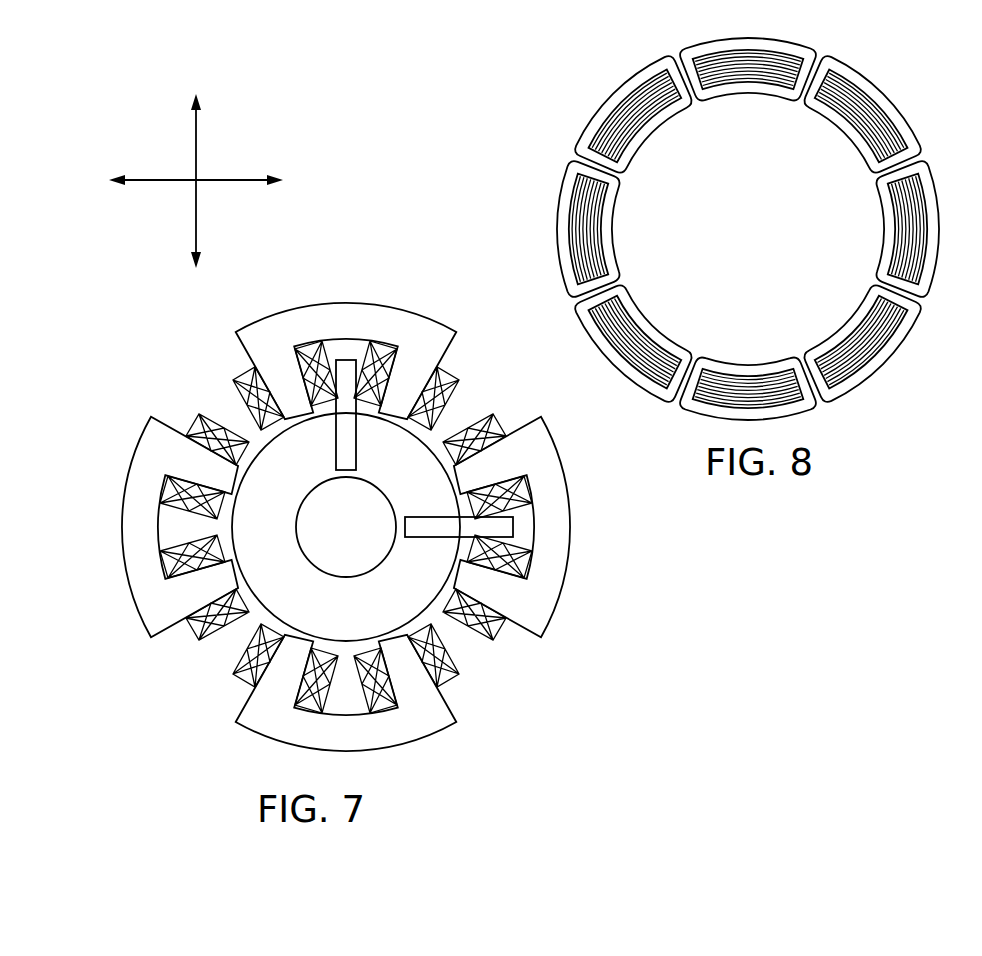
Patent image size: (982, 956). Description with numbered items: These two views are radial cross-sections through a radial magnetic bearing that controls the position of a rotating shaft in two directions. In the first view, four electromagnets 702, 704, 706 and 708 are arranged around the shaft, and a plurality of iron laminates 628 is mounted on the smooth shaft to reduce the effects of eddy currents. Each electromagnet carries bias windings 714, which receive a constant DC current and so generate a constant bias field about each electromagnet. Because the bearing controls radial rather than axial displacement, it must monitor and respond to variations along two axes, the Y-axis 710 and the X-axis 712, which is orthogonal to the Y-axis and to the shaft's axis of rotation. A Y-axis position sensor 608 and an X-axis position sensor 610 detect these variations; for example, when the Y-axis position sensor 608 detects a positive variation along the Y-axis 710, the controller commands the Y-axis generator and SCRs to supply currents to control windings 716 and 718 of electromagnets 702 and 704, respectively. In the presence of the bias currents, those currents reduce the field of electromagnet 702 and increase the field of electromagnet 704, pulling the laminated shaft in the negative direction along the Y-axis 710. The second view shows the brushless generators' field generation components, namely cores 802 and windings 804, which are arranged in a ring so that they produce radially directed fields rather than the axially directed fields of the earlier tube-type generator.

In FIG. 7, the Y-axis position sensor 608 is at (357, 448).
In FIG. 7, the X-axis position sensor 610 is at (435, 537).
In FIG. 7, the iron laminates 628 is at (275, 517).
In FIG. 7, the electromagnet 702 is at (351, 305).
In FIG. 7, the electromagnet 704 is at (350, 752).
In FIG. 7, the electromagnet 706 is at (122, 542).
In FIG. 7, the electromagnet 708 is at (561, 590).
In FIG. 7, the Y-axis 710 is at (196, 137).
In FIG. 7, the X-axis 712 is at (252, 178).
In FIG. 7, the bias windings 714 is at (443, 424).
In FIG. 7, the control winding 716 is at (446, 376).
In FIG. 7, the control winding 718 is at (462, 667).
In FIG. 8, the cores 802 is at (847, 82).
In FIG. 8, the windings 804 is at (904, 116).